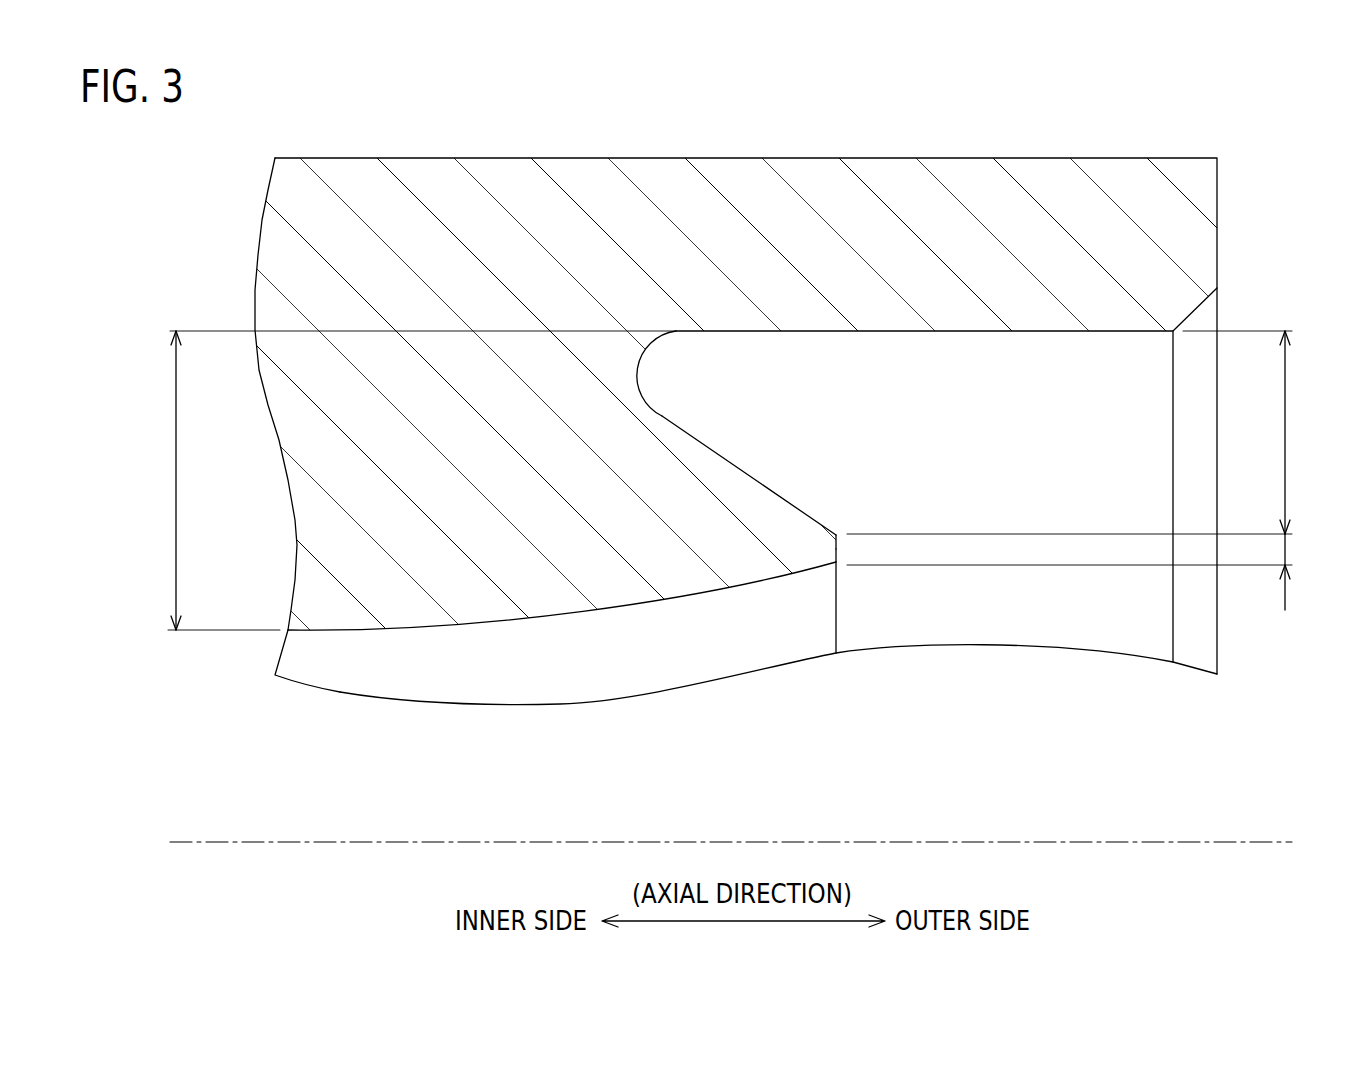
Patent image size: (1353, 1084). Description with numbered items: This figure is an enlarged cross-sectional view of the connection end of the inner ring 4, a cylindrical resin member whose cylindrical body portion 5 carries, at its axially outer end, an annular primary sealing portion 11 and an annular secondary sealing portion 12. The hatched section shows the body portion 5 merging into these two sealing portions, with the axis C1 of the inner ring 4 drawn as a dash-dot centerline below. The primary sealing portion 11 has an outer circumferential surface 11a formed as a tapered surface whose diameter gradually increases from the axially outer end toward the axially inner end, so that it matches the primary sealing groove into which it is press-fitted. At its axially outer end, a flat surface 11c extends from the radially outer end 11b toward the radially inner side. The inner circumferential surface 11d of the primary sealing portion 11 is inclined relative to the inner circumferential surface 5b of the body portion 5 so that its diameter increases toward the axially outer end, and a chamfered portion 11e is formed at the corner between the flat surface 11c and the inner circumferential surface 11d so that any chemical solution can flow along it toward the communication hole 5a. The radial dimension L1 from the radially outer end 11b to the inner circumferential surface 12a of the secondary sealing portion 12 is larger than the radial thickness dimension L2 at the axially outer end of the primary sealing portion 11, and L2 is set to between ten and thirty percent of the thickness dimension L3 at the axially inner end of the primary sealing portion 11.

The inner ring 4 is at (215, 240).
The body portion 5 is at (441, 200).
The communication hole 5a is at (582, 673).
The inner circumferential surface 5b is at (317, 633).
The primary sealing portion 11 is at (792, 540).
The outer circumferential surface 11a is at (718, 452).
The radially outer end 11b is at (837, 533).
The flat surface 11c is at (847, 546).
The inner circumferential surface 11d is at (650, 607).
The chamfered portion 11e is at (835, 565).
The secondary sealing portion 12 is at (1087, 205).
The inner circumferential surface 12a is at (1045, 333).
The radial dimension L1 is at (1083, 432).
The thickness dimension L2 is at (1083, 572).
The thickness dimension L3 is at (408, 480).
The axis C1 is at (1250, 835).